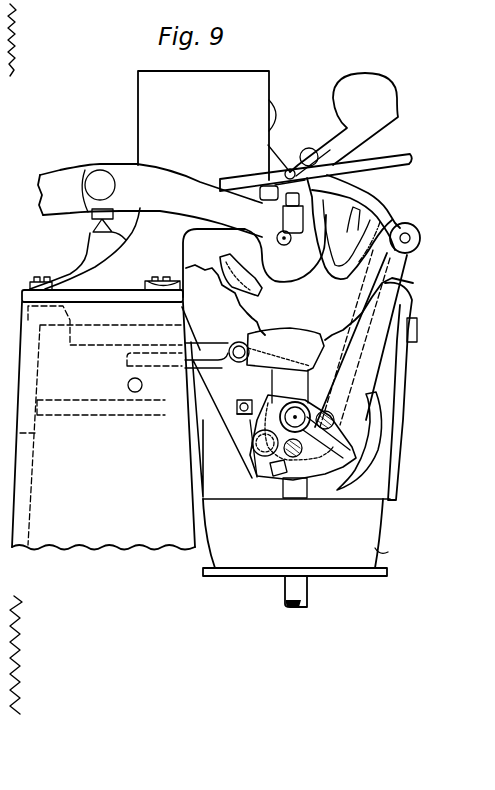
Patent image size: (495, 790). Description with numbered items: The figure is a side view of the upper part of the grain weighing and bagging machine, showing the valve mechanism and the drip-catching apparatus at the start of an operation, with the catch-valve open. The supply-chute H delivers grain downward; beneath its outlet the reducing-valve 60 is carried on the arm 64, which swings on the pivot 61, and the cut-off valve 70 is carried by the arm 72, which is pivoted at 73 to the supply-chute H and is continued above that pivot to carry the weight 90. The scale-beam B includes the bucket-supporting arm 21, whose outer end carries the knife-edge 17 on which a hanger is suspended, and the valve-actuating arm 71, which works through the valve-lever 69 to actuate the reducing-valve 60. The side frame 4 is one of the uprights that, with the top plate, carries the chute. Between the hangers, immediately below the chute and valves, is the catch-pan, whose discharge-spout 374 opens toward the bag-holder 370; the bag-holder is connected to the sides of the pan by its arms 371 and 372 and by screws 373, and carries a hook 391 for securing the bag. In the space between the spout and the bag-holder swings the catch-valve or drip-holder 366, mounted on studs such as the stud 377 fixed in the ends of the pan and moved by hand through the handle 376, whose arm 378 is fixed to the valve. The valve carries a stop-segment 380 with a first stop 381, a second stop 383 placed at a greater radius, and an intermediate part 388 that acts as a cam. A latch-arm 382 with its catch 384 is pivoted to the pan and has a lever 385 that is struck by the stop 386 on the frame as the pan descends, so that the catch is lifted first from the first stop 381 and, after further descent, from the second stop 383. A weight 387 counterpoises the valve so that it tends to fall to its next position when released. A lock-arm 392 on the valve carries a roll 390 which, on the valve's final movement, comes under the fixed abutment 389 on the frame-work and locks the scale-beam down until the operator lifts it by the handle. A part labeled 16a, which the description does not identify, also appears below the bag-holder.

The supply-chute H is at (147, 107).
The scale-beam B is at (72, 165).
The side frame 4 is at (115, 540).
The shaft 16a is at (296, 592).
The knife-edge 17 is at (280, 205).
The bucket-supporting arm 21 is at (173, 182).
The reducing-valve 60 is at (350, 278).
The pivot 61 is at (291, 170).
The arm 64 is at (350, 198).
The valve-lever 69 is at (378, 102).
The cut-off valve 70 is at (242, 275).
The valve-actuating arm 71 is at (402, 158).
The arm 72 is at (252, 250).
The pivot 73 is at (284, 245).
The weight 90 is at (277, 108).
The catch-valve 366 is at (378, 430).
The bag-holder 370 is at (368, 518).
The arm 371 is at (392, 445).
The arm 372 is at (197, 442).
The screws 373 is at (417, 327).
The discharge-spout 374 is at (282, 480).
The handle 376 is at (421, 237).
The stud 377 is at (305, 419).
The arm 378 is at (402, 263).
The stop-segment 380 is at (315, 465).
The first stop 381 is at (252, 425).
The latch-arm 382 is at (236, 402).
The second stop 383 is at (278, 470).
The catch 384 is at (236, 411).
The lever 385 is at (204, 357).
The stop 386 is at (127, 382).
The weight 387 is at (288, 336).
The intermediate part 388 is at (262, 432).
The abutment 389 is at (165, 408).
The roll 390 is at (284, 453).
The hook 391 is at (390, 553).
The lock-arm 392 is at (258, 397).